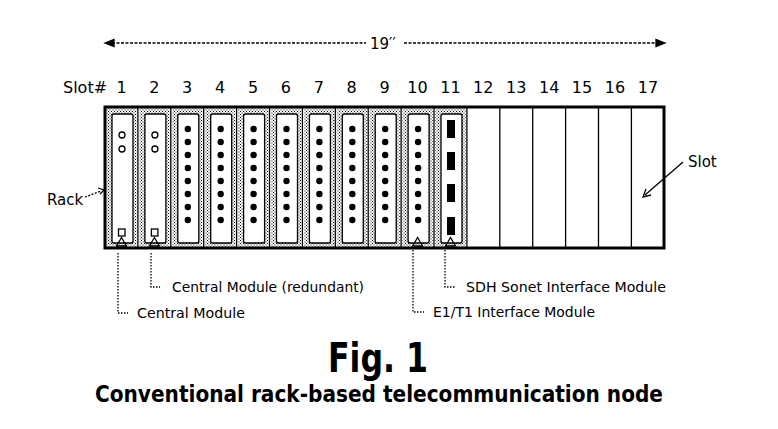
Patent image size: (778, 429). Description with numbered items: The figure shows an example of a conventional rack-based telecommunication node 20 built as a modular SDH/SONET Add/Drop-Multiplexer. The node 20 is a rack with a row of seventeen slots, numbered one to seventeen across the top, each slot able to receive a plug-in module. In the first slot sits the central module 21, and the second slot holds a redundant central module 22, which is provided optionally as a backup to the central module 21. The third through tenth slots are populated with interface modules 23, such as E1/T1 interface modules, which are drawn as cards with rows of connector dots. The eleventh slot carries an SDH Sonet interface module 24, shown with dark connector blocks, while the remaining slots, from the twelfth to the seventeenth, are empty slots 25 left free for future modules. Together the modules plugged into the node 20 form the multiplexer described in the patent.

The rack-based telecommunication node 20 is at (676, 104).
The central module 21 is at (126, 182).
The redundant central module 22 is at (149, 205).
The interface modules 23 is at (184, 229).
The SDH Sonet interface module 24 is at (457, 240).
The empty slot 25 is at (515, 226).